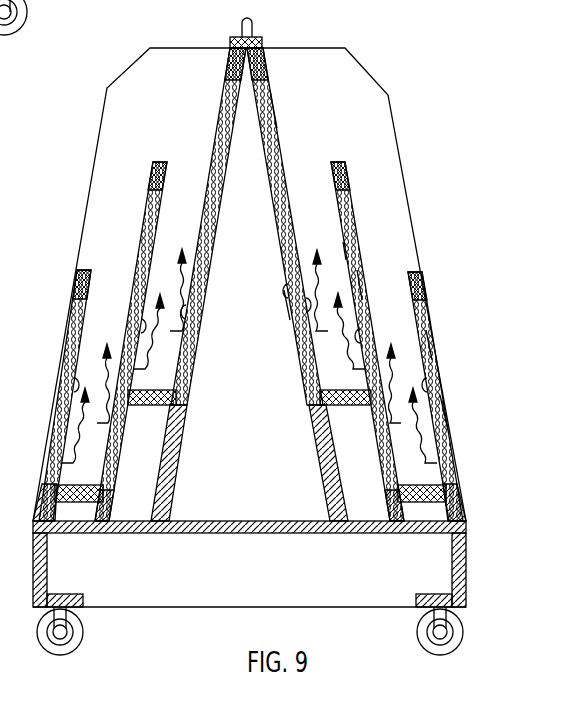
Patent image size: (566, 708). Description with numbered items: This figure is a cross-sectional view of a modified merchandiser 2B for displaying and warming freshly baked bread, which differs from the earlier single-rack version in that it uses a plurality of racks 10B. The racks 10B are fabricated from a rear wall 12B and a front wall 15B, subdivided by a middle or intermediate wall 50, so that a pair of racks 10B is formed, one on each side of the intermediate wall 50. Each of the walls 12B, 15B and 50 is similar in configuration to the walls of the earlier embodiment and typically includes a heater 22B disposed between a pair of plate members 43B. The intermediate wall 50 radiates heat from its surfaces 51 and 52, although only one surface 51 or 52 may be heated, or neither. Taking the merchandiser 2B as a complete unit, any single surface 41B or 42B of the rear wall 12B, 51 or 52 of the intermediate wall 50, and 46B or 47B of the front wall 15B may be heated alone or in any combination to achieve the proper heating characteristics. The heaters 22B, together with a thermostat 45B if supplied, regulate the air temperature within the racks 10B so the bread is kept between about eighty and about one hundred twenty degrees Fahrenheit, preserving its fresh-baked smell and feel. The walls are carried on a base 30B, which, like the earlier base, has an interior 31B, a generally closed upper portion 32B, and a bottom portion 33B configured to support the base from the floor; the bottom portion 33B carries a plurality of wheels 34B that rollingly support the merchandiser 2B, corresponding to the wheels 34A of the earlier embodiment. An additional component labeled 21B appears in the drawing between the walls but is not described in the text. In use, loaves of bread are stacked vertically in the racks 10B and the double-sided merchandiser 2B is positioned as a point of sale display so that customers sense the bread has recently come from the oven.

The merchandiser 2B is at (378, 35).
The rack 10B is at (303, 157).
The rear wall 12B is at (226, 88).
The front wall 15B is at (72, 316).
The cross brace 21B is at (165, 391).
The heater 22B is at (263, 152).
The base 30B is at (468, 560).
The interior 31B is at (360, 589).
The upper portion 32B is at (296, 535).
The bottom portion 33B is at (443, 602).
The wheels 34B is at (83, 622).
The wheels 34A is at (28, 3).
The surface of rear wall 41B is at (277, 128).
The surface of rear wall 42B is at (282, 305).
The plate members 43B is at (268, 190).
The thermostat 45B is at (284, 291).
The surface of front wall 46B is at (443, 400).
The surface of front wall 47B is at (430, 341).
The intermediate wall 50 is at (147, 203).
The surface of intermediate wall 51 is at (340, 242).
The surface of intermediate wall 52 is at (363, 282).